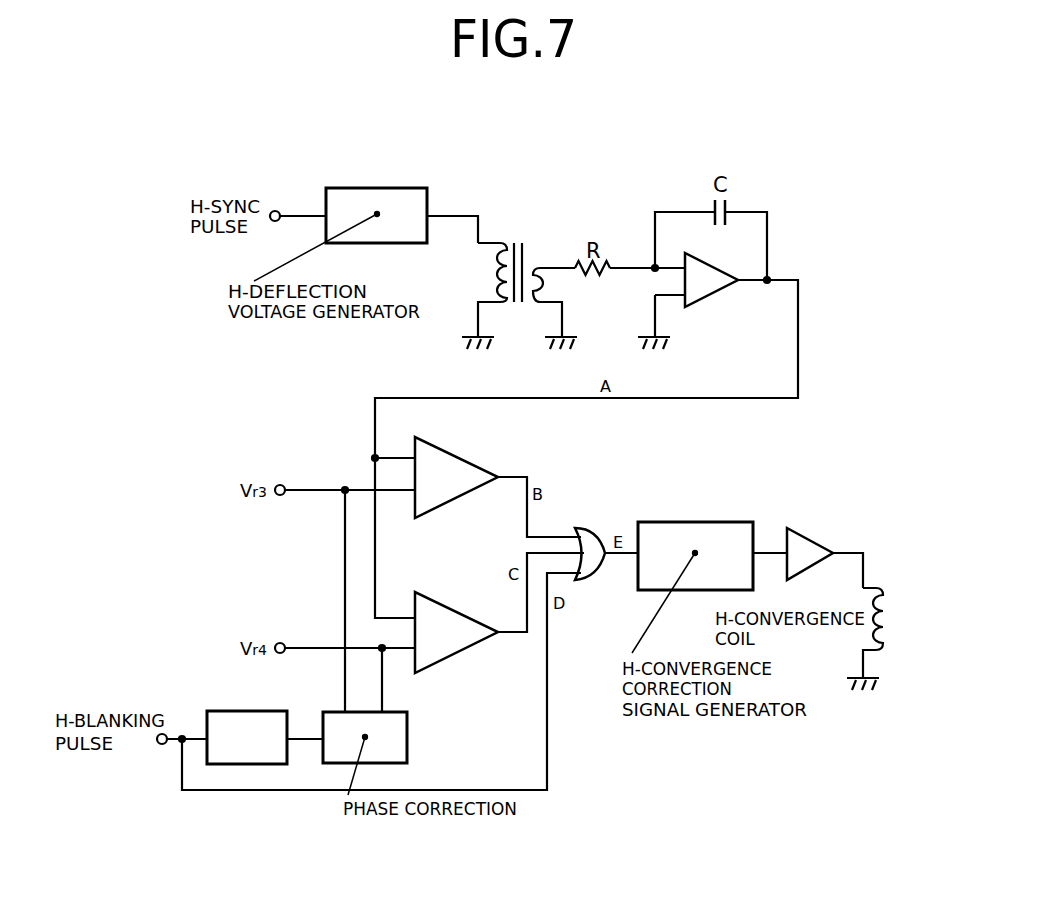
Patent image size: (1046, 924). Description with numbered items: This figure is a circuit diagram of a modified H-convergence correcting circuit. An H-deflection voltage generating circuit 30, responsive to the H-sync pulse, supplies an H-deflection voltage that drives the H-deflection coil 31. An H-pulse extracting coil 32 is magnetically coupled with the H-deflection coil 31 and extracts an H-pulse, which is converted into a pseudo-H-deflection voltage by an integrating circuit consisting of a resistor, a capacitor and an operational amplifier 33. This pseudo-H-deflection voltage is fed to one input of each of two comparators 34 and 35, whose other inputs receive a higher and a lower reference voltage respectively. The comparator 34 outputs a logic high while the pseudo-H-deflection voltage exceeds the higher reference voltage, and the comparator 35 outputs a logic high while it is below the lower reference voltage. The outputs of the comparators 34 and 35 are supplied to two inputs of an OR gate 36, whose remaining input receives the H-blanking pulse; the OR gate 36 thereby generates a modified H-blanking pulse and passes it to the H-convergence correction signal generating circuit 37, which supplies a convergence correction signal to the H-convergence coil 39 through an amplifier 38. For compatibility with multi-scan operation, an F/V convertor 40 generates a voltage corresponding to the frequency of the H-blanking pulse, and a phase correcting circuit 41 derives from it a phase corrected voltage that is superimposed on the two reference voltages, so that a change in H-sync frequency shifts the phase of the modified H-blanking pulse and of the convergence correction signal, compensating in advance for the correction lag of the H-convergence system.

The H-deflection voltage generating circuit 30 is at (417, 188).
The H-deflection coil 31 is at (492, 264).
The H-pulse extracting coil 32 is at (533, 268).
The operational amplifier 33 is at (718, 272).
The comparator 34 is at (480, 466).
The comparator 35 is at (466, 612).
The OR gate 36 is at (597, 530).
The H-convergence correction signal generating circuit 37 is at (725, 522).
The amplifier 38 is at (811, 530).
The H-convergence coil 39 is at (883, 592).
The F/V convertor 40 is at (268, 711).
The phase correcting circuit 41 is at (407, 732).